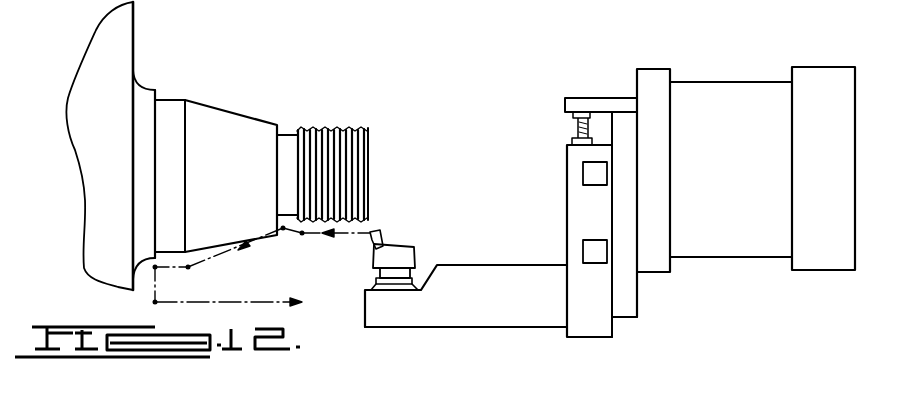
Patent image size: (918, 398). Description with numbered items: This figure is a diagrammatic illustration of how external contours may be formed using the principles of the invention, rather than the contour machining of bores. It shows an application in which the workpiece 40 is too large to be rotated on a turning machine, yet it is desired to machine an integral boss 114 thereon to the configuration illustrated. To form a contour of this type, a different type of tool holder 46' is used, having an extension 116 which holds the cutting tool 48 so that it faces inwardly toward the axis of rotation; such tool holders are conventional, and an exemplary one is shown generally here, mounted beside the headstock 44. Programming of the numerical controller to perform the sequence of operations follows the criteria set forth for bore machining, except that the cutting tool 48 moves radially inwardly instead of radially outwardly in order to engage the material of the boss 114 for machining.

The workpiece 40 is at (126, 22).
The integral boss 114 is at (238, 118).
The cutting tool 48 is at (380, 233).
The extension 116 is at (497, 278).
The tool holder 46' is at (567, 217).
The headstock 44 is at (744, 168).